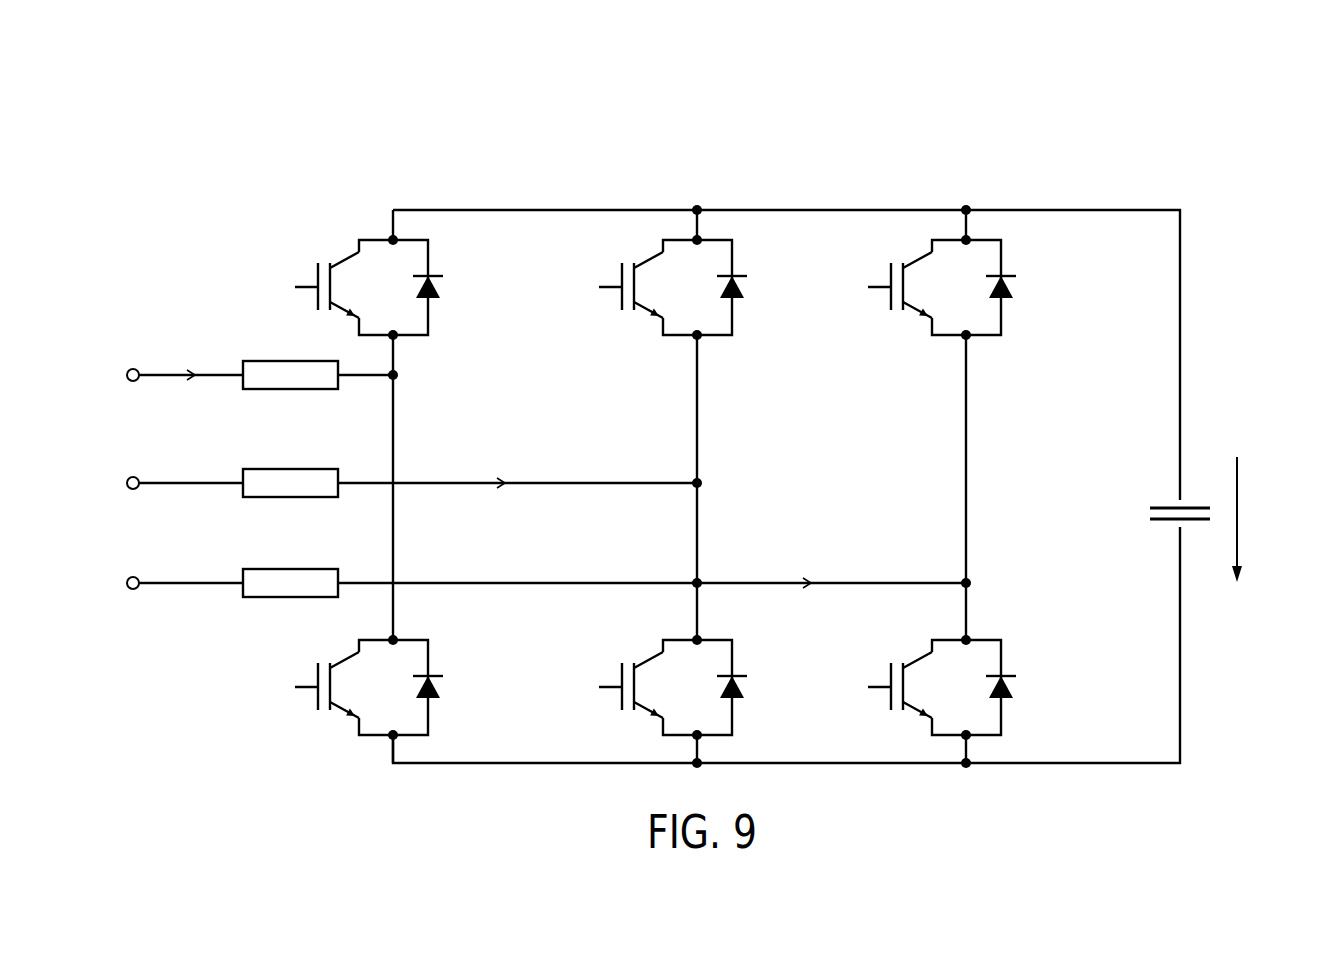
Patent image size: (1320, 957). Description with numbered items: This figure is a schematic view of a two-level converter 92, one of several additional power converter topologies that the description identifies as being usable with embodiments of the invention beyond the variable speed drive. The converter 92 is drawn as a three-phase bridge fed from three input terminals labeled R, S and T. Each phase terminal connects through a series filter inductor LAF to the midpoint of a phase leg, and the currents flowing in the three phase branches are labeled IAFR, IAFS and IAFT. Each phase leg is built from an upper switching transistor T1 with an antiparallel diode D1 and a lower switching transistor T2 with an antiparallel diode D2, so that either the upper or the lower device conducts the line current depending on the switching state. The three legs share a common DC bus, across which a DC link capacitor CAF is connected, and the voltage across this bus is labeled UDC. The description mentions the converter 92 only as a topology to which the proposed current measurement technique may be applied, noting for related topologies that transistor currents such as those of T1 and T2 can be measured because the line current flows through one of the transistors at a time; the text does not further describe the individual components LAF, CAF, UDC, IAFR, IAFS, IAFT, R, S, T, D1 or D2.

The two-level converter 92 is at (1136, 124).
The element T1 is at (331, 287).
The upper freewheeling diode D1 is at (433, 287).
The element T2 is at (330, 687).
The lower freewheeling diode D2 is at (434, 687).
The filter inductor LAF is at (290, 359).
The DC link capacitor CAF is at (1156, 519).
The DC link voltage UDC is at (1261, 519).
The filter current phase R IAFR is at (195, 354).
The filter current phase S IAFS is at (502, 463).
The filter current phase T IAFT is at (809, 564).
The phase R terminal R is at (133, 364).
The phase S terminal S is at (133, 470).
The phase T terminal T is at (132, 570).